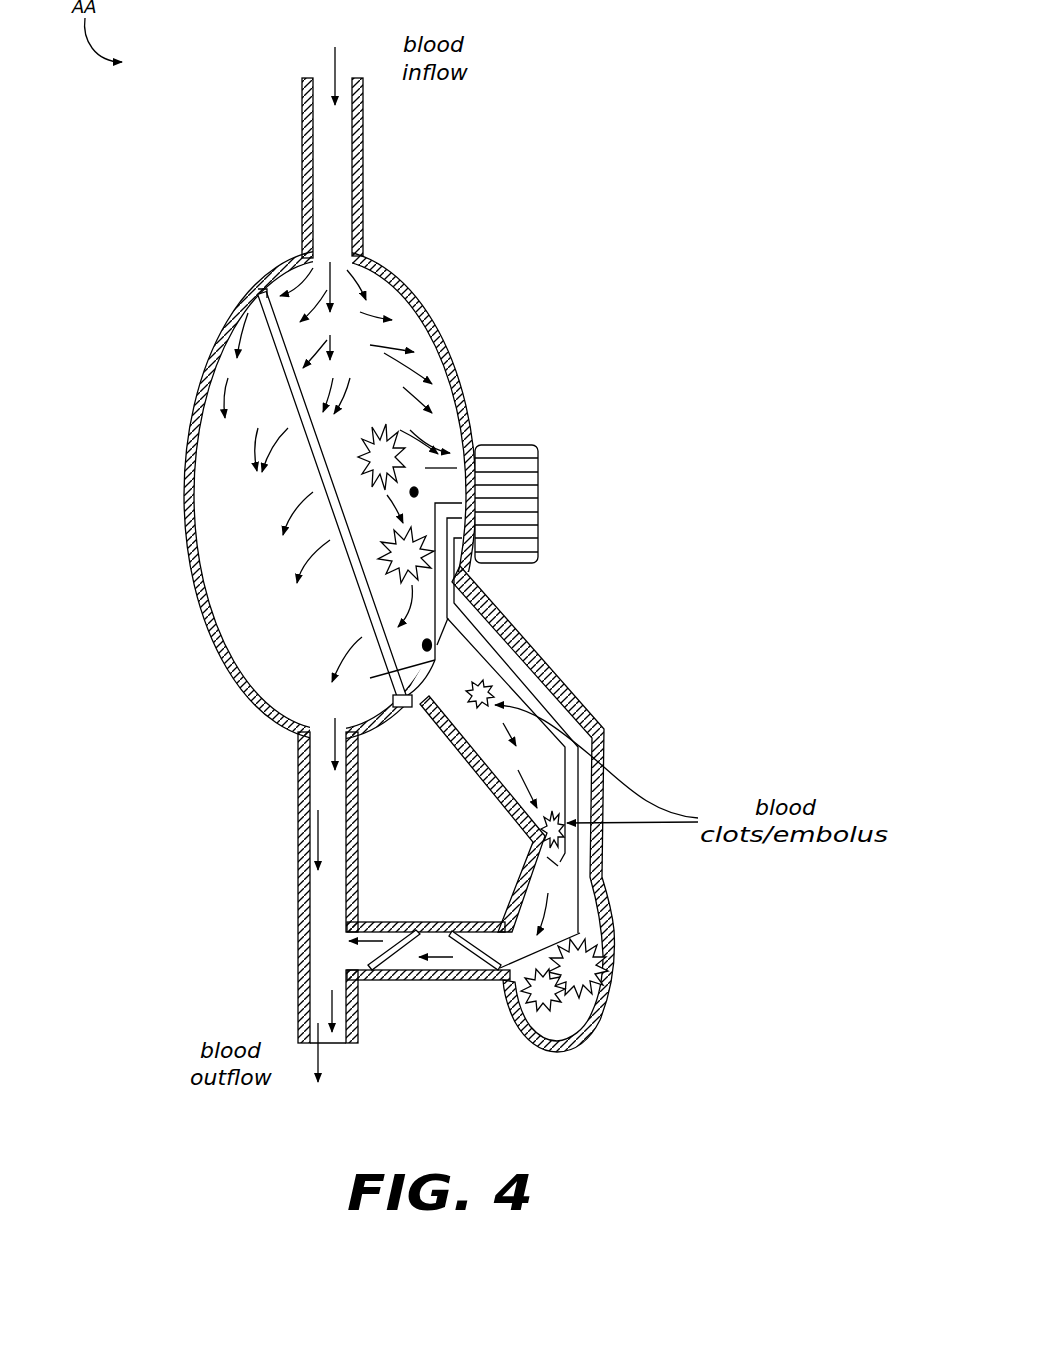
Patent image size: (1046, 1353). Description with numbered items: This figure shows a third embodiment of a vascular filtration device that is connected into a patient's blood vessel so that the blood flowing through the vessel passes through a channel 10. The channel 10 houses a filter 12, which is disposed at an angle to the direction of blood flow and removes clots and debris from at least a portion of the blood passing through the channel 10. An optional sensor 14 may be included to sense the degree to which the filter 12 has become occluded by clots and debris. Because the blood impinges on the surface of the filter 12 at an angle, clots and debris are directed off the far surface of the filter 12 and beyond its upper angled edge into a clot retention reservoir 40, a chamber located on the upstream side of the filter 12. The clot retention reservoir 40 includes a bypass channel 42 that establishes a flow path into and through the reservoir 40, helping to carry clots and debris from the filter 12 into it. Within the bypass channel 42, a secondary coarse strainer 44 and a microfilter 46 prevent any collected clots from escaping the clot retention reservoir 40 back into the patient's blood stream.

The channel 10 is at (258, 268).
The filter 12 is at (268, 368).
The sensor 14 is at (550, 495).
The clot retention reservoir 40 is at (644, 950).
The bypass channel 42 is at (428, 930).
The secondary coarse strainer 44 is at (475, 976).
The microfilter 46 is at (394, 973).